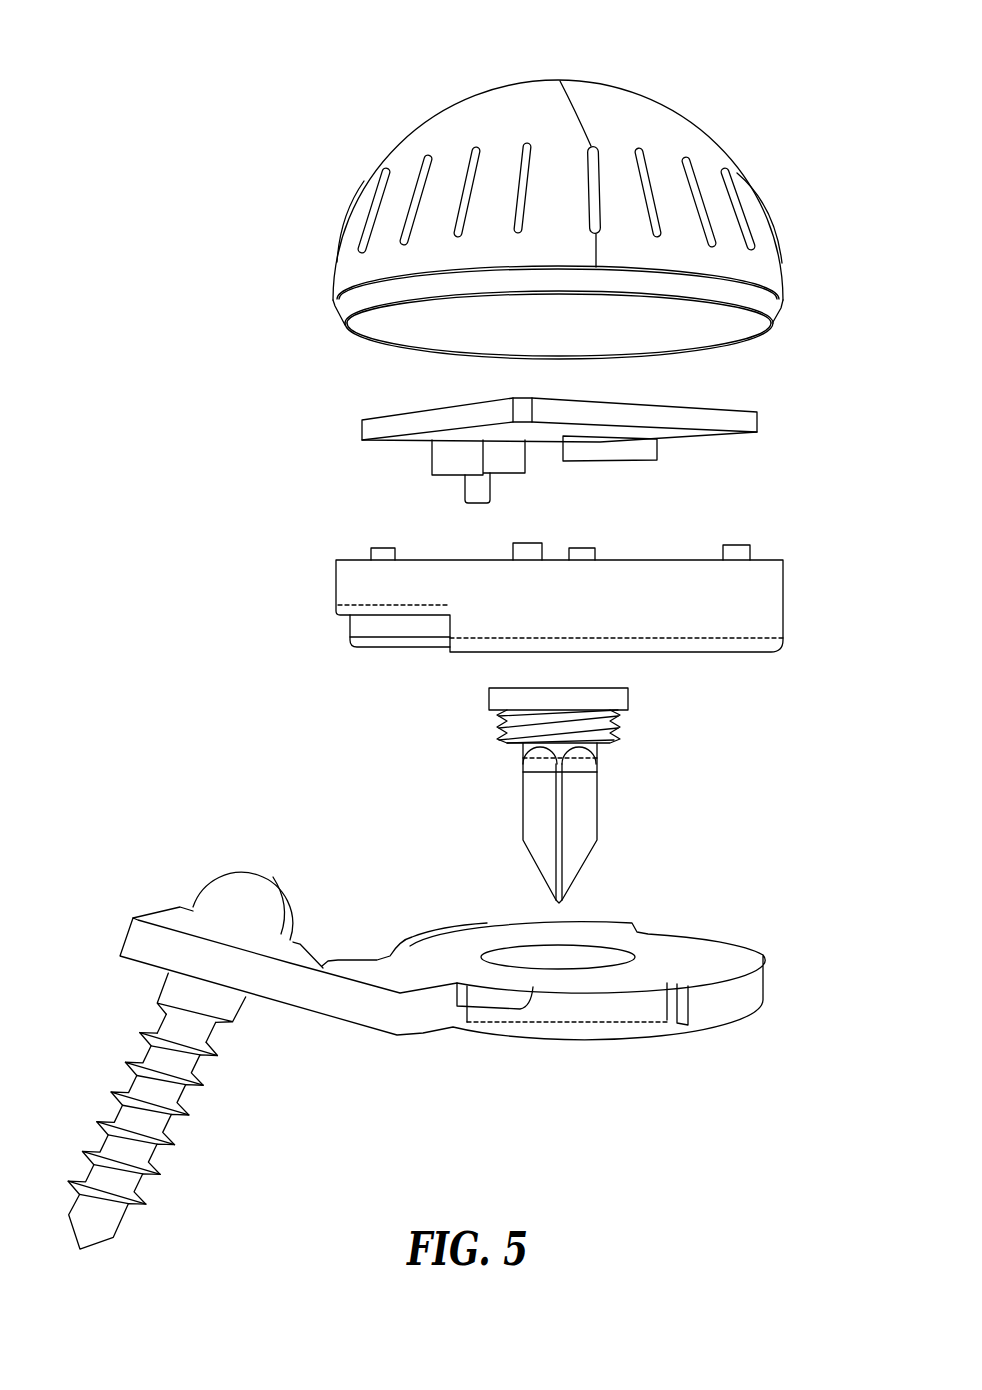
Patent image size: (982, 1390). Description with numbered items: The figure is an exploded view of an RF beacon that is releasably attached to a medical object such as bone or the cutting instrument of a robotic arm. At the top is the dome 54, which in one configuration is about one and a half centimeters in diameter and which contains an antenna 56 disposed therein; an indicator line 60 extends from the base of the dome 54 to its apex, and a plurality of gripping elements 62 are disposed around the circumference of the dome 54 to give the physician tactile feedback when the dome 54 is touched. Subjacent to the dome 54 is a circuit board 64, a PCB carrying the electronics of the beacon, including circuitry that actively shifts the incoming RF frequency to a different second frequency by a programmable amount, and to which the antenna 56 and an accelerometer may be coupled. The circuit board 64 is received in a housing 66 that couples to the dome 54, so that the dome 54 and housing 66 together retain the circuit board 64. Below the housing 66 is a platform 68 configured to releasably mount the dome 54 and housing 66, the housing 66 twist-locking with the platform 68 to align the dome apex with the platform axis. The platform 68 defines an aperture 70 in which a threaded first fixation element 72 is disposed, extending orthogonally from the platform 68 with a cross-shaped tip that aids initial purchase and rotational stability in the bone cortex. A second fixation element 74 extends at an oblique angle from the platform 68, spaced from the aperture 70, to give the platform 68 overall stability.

The dome 54 is at (677, 110).
The antenna 56 is at (562, 82).
The indicator line 60 is at (590, 118).
The gripping elements 62 is at (735, 184).
The circuit board 64 is at (362, 433).
The housing 66 is at (336, 566).
The platform 68 is at (698, 955).
The aperture 70 is at (535, 957).
The first fixation element 72 is at (523, 800).
The second fixation element 74 is at (185, 1094).